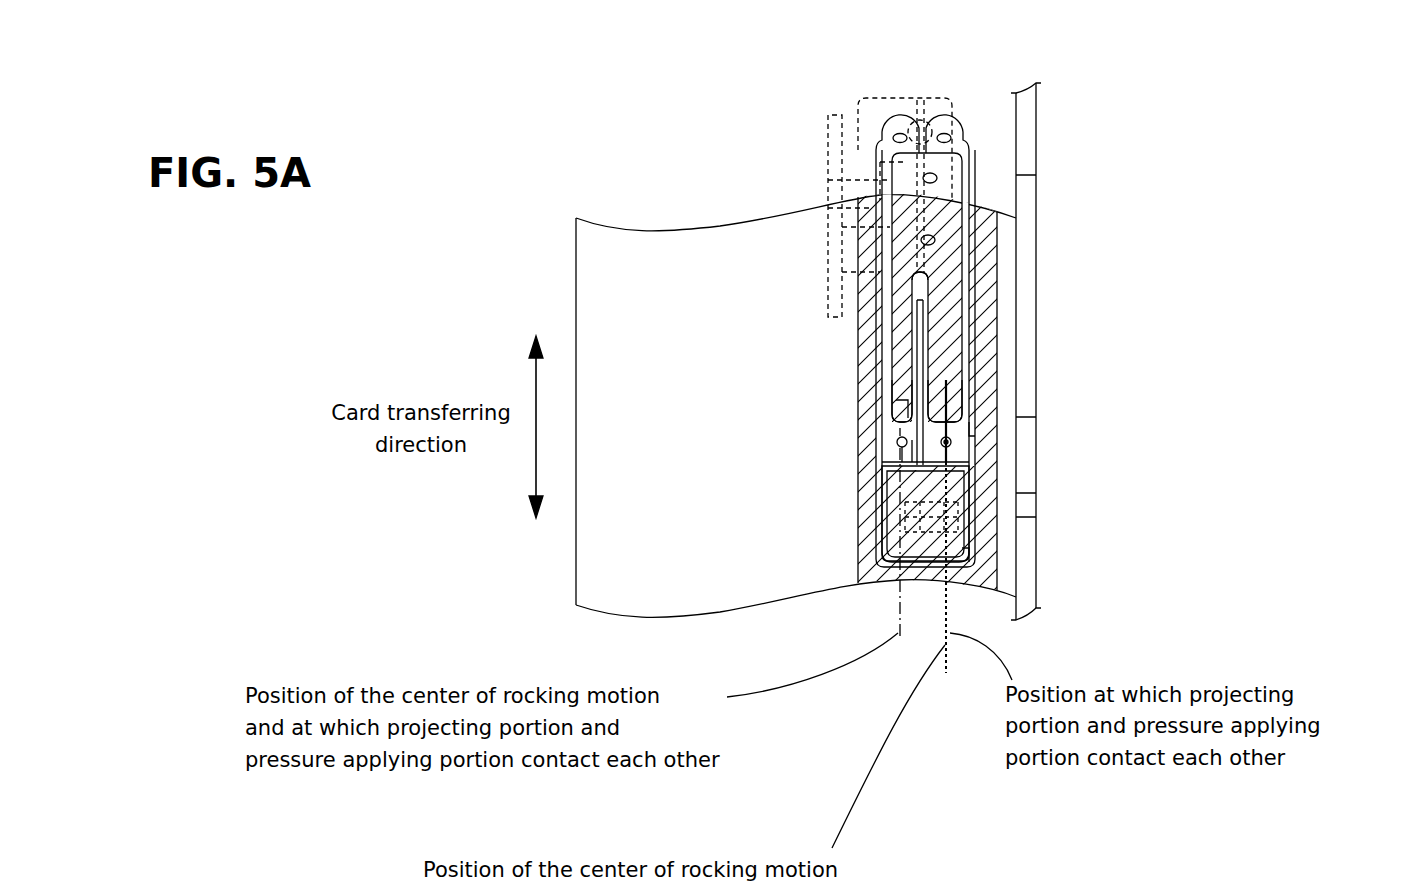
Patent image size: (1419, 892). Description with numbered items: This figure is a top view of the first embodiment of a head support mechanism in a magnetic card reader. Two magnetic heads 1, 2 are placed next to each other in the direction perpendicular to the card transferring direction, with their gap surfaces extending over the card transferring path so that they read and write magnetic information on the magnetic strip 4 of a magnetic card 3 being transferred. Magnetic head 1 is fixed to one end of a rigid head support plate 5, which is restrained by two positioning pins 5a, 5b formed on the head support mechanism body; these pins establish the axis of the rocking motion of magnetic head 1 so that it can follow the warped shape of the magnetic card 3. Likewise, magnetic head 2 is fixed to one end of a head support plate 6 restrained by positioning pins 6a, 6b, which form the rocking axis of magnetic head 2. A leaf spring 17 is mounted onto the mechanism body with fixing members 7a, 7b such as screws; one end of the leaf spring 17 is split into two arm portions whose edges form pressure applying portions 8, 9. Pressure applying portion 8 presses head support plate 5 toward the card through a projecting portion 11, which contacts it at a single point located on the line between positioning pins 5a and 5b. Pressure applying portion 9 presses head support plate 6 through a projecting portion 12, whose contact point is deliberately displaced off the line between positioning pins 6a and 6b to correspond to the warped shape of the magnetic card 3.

The magnetic head 1 is at (882, 542).
The magnetic head 2 is at (975, 548).
The magnetic card 3 is at (720, 238).
The magnetic strip 4 is at (887, 578).
The head support plate 5 is at (882, 436).
The positioning pin 5a is at (880, 464).
The positioning pin 5b is at (898, 134).
The head support plate 6 is at (975, 420).
The positioning pin 6a is at (978, 445).
The positioning pin 6b is at (946, 134).
The fixing member 7a is at (936, 240).
The fixing member 7b is at (938, 180).
The pressure applying portion 8 is at (895, 383).
The pressure applying portion 9 is at (950, 370).
The projecting portion 11 is at (908, 403).
The projecting portion 12 is at (950, 385).
The leaf spring 17 is at (958, 290).